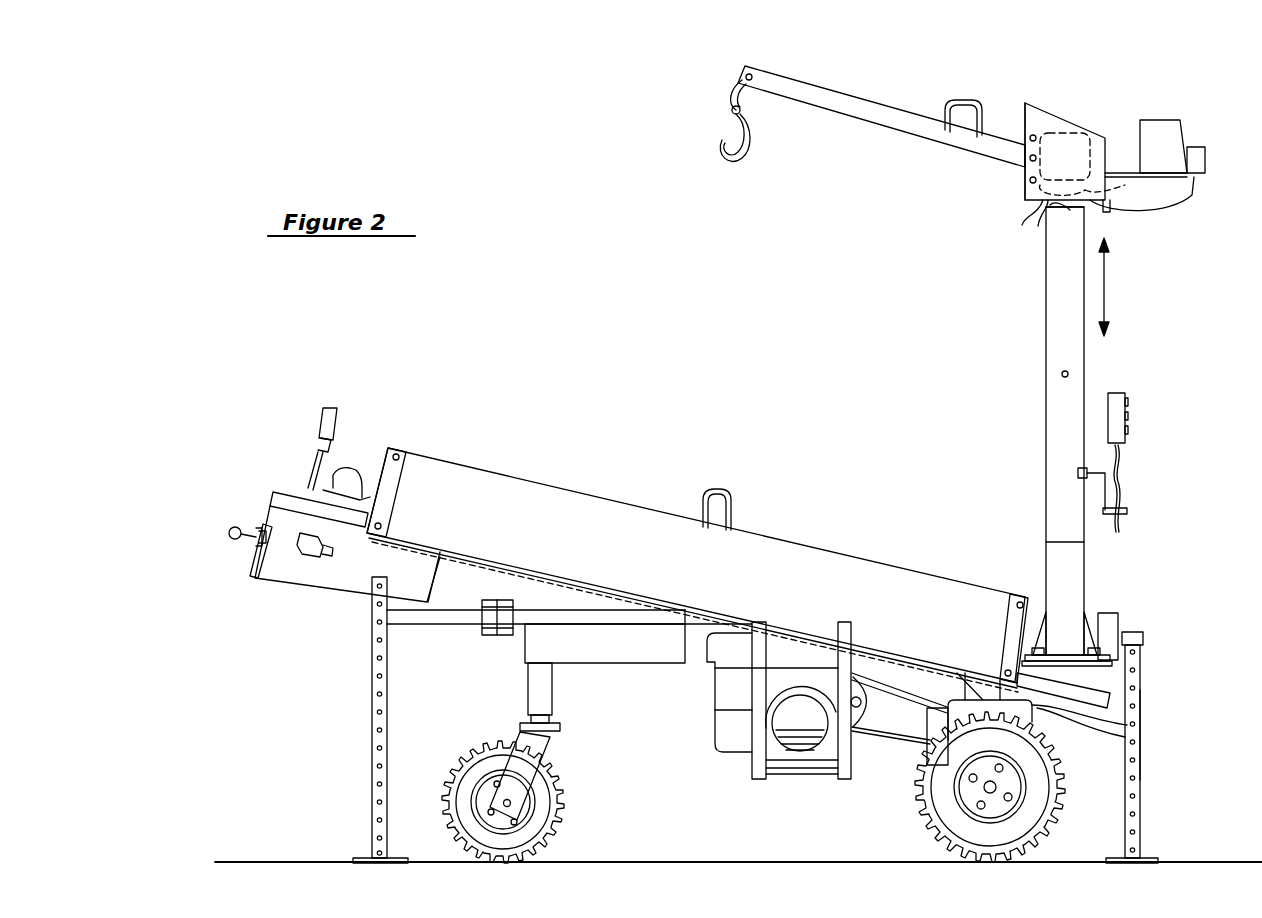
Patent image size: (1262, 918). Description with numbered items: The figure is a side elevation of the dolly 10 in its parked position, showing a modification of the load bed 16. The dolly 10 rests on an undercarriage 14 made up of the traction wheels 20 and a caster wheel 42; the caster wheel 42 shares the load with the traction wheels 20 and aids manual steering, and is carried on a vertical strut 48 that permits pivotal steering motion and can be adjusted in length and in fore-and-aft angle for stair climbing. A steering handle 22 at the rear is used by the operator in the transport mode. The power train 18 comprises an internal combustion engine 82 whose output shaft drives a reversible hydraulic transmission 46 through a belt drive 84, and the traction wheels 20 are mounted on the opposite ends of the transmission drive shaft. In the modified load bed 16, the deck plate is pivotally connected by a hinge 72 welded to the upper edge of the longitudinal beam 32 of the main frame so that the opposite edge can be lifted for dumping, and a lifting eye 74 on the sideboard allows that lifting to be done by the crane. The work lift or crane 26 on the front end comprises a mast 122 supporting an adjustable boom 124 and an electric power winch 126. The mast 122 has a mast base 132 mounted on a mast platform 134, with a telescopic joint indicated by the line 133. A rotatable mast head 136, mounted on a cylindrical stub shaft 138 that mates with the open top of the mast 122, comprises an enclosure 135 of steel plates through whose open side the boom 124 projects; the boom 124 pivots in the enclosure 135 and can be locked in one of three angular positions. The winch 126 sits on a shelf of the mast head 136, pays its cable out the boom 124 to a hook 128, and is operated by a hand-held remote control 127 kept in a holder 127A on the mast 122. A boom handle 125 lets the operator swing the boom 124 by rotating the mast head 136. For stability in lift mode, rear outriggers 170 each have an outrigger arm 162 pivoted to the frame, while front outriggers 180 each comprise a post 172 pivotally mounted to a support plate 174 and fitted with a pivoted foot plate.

The dolly 10 is at (1120, 95).
The undercarriage 14 is at (478, 715).
The load bed 16 is at (790, 515).
The power train 18 is at (815, 796).
The traction wheels 20 is at (1066, 777).
The steering handle 22 is at (215, 513).
The work lift or crane 26 is at (1000, 307).
The longitudinal beam 32 is at (617, 630).
The caster wheel 42 is at (565, 805).
The hydraulic transmission 46 is at (1080, 716).
The vertical strut 48 is at (528, 688).
The hinge 72 is at (540, 560).
The lifting eye 74 is at (732, 488).
The internal combustion engine 82 is at (782, 722).
The belt drive 84 is at (896, 718).
The mast 122 is at (1046, 278).
The boom 124 is at (905, 110).
The boom handle 125 is at (962, 102).
The power winch 126 is at (1168, 118).
The hand-held remote control 127 is at (725, 85).
The holder 127A is at (1110, 490).
The hook 128 is at (740, 165).
The mast base 132 is at (1085, 620).
The line indicating telescopic joint 133 is at (1065, 540).
The mast platform 134 is at (1090, 680).
The enclosure 135 is at (1042, 118).
The rotatable mast head 136 is at (1050, 98).
The cylindrical stub shaft 138 is at (1020, 178).
The outrigger arm 162 is at (418, 626).
The rear outriggers 170 is at (360, 696).
The post 172 is at (1142, 702).
The support plate 174 is at (1112, 620).
The front outriggers 180 is at (1150, 742).